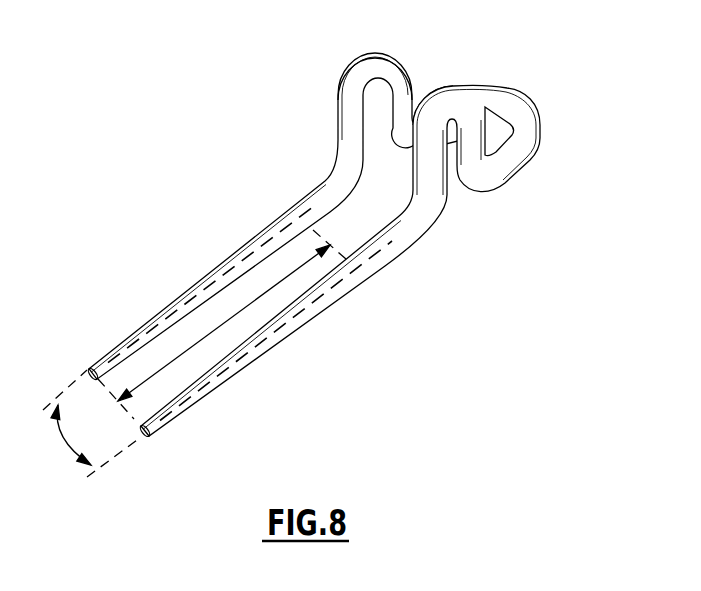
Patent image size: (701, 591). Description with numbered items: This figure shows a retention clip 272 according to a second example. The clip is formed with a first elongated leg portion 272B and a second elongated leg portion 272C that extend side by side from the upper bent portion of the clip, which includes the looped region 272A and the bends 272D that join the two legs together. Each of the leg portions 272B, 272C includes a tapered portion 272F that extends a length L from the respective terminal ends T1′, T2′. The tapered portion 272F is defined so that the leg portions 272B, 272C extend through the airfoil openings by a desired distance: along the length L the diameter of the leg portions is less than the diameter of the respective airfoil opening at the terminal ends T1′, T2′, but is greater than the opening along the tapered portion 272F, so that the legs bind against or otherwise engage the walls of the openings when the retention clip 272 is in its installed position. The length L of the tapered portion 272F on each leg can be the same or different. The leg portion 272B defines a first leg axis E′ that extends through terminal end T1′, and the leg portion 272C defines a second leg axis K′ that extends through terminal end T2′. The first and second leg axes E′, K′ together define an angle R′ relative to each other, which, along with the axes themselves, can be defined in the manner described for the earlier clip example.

The retention clip 272 is at (338, 222).
The loop portion 272A is at (533, 107).
The first elongated leg portion 272B is at (232, 398).
The second elongated leg portion 272C is at (158, 310).
The bend portions 272D is at (375, 60).
The tapered portion 272F is at (243, 243).
The second leg axis K′ is at (207, 287).
The first leg axis E′ is at (275, 337).
The terminal end T1′ is at (177, 420).
The terminal end T2′ is at (108, 353).
The length L is at (163, 368).
The angle R′ is at (70, 443).